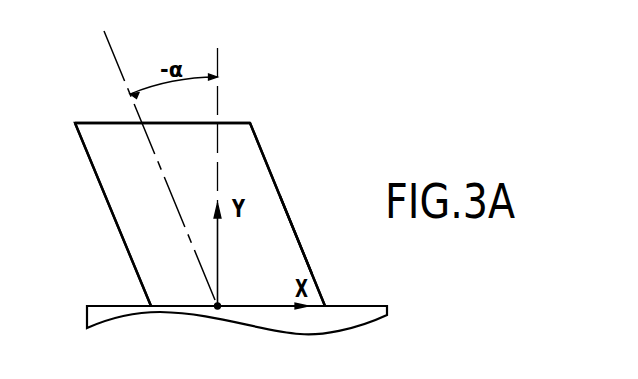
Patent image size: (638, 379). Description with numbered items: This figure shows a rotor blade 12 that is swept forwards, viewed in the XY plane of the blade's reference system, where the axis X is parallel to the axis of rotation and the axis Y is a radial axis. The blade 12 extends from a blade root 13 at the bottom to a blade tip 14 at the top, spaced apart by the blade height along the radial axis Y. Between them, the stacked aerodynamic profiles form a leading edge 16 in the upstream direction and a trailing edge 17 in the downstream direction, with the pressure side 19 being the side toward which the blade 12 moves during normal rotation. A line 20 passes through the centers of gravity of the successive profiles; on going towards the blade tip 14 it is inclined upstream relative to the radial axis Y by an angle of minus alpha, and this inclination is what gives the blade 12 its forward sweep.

The blade 12 is at (292, 121).
The blade root 13 is at (180, 306).
The blade tip 14 is at (101, 122).
The leading edge 16 is at (118, 230).
The trailing edge 17 is at (277, 185).
The pressure side 19 is at (267, 230).
The line 20 is at (110, 52).